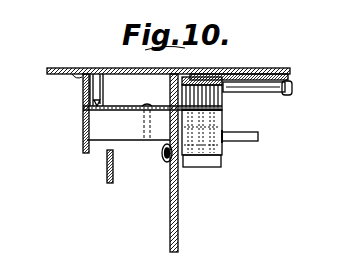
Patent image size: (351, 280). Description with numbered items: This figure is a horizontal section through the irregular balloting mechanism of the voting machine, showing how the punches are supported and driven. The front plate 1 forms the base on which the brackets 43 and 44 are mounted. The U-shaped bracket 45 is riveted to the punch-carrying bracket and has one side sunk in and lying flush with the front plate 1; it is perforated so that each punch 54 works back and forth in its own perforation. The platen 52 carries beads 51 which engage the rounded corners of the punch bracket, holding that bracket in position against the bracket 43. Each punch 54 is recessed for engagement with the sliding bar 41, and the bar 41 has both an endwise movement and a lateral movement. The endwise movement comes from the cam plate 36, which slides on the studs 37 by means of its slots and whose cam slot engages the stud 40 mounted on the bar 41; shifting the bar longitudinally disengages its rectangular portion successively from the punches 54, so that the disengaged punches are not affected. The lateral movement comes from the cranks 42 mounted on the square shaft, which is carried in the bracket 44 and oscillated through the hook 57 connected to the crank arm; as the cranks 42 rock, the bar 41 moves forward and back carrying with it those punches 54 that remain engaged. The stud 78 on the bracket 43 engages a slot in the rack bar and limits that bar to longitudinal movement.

The front plate 1 is at (268, 58).
The U-shaped bracket 45 is at (217, 70).
The stud 37 is at (85, 108).
The bracket 44 is at (96, 92).
The stud 40 is at (148, 106).
The cam plate 36 is at (112, 109).
The sliding bar 41 is at (131, 140).
The hook 57 is at (108, 183).
The stud 78 is at (165, 168).
The bracket 43 is at (172, 226).
The punch 54 is at (220, 154).
The crank 42 is at (223, 132).
The bead 51 is at (250, 92).
The platen 52 is at (282, 94).